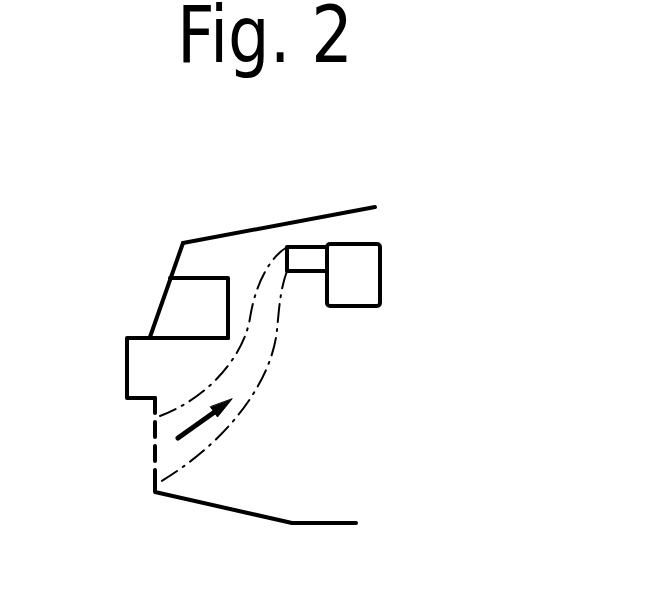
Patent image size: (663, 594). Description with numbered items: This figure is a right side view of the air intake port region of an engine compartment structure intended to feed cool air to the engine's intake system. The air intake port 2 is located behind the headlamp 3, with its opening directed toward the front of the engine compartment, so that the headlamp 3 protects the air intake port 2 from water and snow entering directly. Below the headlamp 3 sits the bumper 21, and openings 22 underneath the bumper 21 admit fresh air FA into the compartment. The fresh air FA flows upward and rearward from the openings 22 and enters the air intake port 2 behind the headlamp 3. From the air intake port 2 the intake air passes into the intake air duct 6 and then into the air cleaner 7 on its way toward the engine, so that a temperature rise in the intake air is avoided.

The air intake port 2 is at (287, 247).
The headlamp 3 is at (182, 307).
The intake air duct 6 is at (316, 247).
The air cleaner 7 is at (353, 244).
The bumper 21 is at (127, 363).
The openings 22 is at (150, 462).
The fresh air FA is at (210, 425).